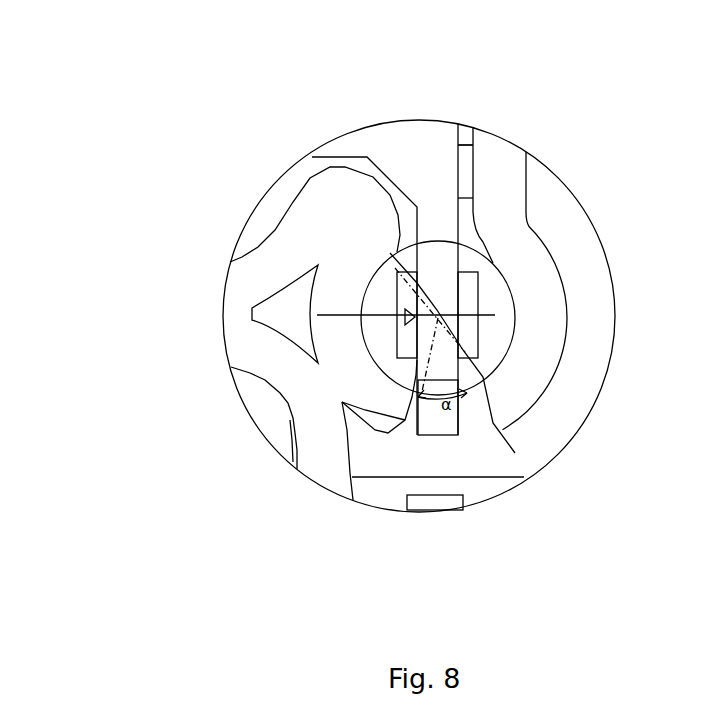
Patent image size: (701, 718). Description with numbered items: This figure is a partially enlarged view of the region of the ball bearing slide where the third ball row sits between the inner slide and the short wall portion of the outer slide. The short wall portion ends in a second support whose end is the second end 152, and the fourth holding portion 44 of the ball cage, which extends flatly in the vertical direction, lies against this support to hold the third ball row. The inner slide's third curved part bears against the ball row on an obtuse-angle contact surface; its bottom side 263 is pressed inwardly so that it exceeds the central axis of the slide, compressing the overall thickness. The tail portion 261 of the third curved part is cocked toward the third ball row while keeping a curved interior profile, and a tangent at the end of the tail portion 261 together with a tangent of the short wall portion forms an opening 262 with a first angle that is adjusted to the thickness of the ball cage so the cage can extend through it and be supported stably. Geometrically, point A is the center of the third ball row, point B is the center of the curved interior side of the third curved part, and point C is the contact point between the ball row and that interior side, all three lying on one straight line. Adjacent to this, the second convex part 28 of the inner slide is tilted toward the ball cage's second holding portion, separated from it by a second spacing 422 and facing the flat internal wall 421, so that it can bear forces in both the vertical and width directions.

The second convex part 28 is at (314, 260).
The fourth holding portion 44 is at (432, 478).
The second end 152 is at (493, 384).
The tail portion 261 is at (290, 402).
The opening 262 is at (434, 509).
The bottom side 263 is at (239, 278).
The internal wall 421 is at (468, 113).
The second spacing 422 is at (394, 229).
The point A is at (494, 258).
The point B is at (496, 303).
The point C is at (458, 207).